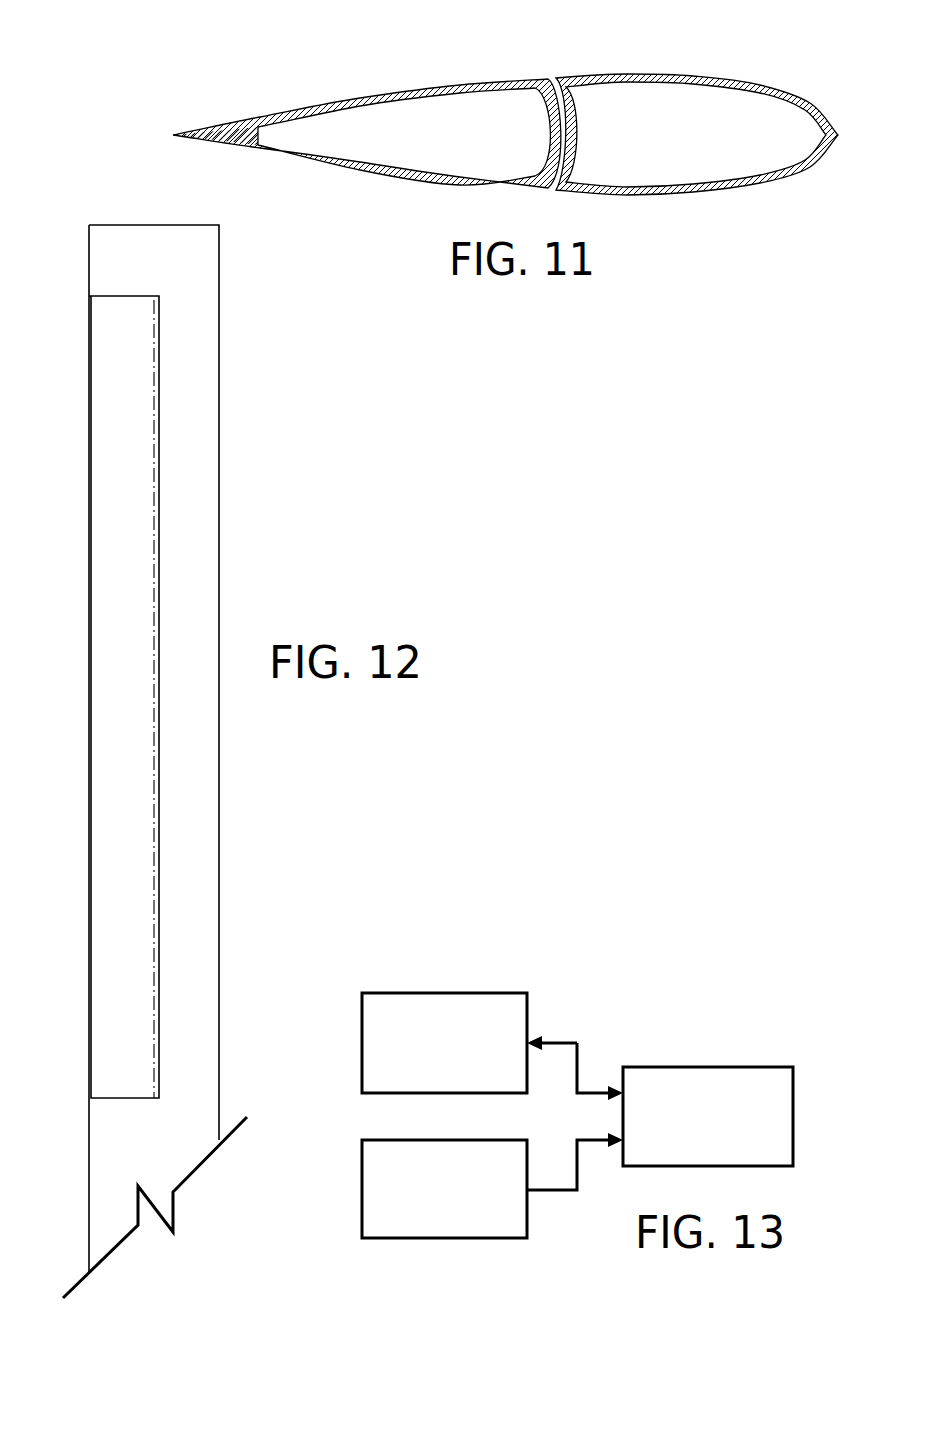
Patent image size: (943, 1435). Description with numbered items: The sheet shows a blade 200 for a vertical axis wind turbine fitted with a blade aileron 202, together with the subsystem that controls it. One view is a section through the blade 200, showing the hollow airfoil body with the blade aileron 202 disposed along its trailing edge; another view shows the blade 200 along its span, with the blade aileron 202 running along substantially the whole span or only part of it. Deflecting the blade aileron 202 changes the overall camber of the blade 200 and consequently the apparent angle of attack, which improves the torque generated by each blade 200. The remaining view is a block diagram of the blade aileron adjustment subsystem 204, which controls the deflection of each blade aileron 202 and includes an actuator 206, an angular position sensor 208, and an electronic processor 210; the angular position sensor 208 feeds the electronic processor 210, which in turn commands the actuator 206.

In FIG. 11, the blade 200 is at (757, 80).
In FIG. 12, the blade 200 is at (198, 422).
In FIG. 11, the blade aileron 202 is at (340, 103).
In FIG. 12, the blade aileron 202 is at (110, 548).
In FIG. 13, the blade aileron adjustment subsystem 204 is at (718, 968).
In FIG. 13, the actuator 206 is at (397, 992).
In FIG. 13, the angular position sensor 208 is at (395, 1240).
In FIG. 13, the electronic processor 210 is at (758, 1067).